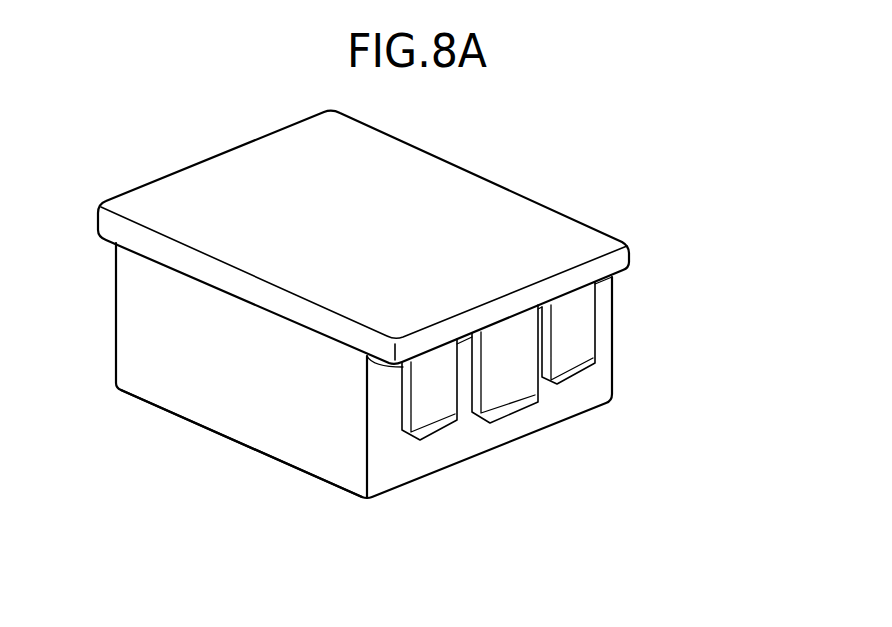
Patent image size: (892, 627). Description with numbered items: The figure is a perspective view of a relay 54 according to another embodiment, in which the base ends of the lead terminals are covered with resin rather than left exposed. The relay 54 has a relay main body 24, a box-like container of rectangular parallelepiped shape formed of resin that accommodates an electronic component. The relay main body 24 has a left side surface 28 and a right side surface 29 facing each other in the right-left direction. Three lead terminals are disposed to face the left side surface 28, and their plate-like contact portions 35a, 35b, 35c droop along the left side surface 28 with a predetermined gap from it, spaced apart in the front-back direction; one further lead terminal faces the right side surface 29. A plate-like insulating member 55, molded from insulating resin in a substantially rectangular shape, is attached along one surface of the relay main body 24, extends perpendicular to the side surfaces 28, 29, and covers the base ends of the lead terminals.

The relay 54 is at (512, 173).
The insulating member 55 is at (435, 175).
The left side surface 28 is at (115, 320).
The relay main body 24 is at (167, 413).
The right side surface 29 is at (513, 430).
The contact portion 35a is at (575, 338).
The contact portion 35b is at (512, 385).
The contact portion 35c is at (440, 407).